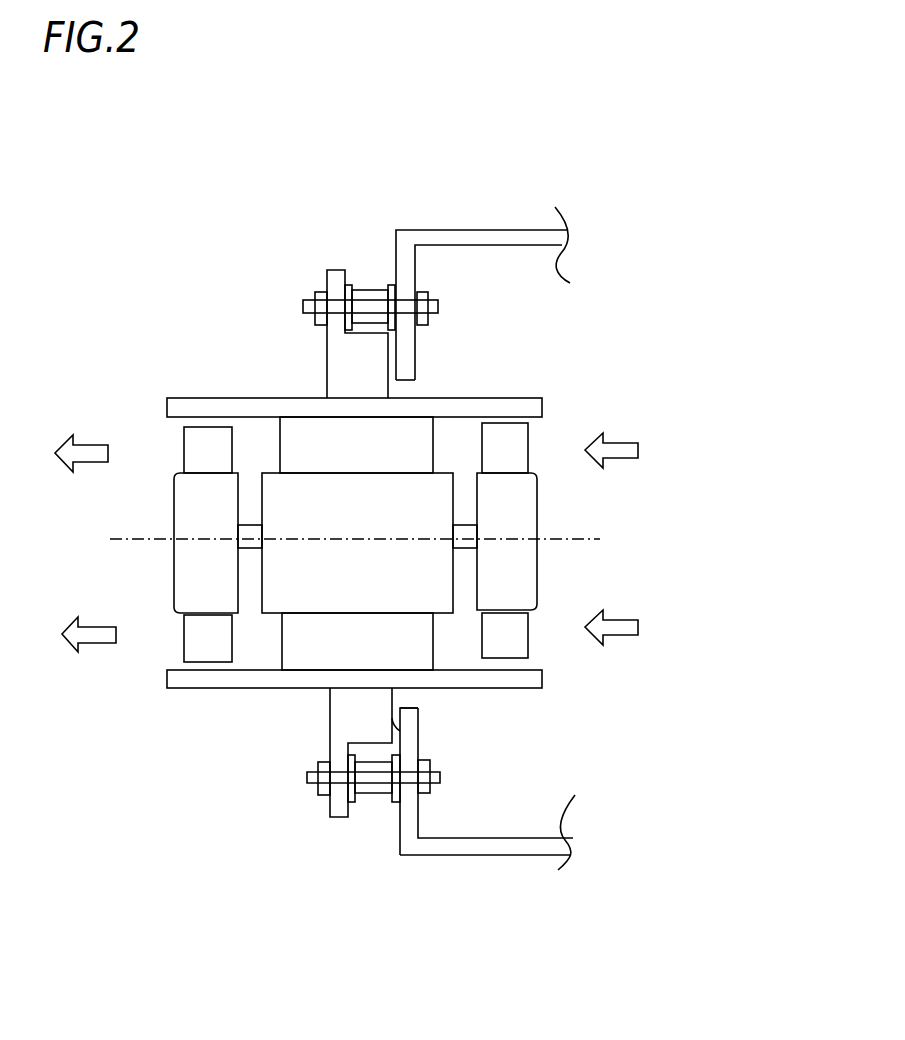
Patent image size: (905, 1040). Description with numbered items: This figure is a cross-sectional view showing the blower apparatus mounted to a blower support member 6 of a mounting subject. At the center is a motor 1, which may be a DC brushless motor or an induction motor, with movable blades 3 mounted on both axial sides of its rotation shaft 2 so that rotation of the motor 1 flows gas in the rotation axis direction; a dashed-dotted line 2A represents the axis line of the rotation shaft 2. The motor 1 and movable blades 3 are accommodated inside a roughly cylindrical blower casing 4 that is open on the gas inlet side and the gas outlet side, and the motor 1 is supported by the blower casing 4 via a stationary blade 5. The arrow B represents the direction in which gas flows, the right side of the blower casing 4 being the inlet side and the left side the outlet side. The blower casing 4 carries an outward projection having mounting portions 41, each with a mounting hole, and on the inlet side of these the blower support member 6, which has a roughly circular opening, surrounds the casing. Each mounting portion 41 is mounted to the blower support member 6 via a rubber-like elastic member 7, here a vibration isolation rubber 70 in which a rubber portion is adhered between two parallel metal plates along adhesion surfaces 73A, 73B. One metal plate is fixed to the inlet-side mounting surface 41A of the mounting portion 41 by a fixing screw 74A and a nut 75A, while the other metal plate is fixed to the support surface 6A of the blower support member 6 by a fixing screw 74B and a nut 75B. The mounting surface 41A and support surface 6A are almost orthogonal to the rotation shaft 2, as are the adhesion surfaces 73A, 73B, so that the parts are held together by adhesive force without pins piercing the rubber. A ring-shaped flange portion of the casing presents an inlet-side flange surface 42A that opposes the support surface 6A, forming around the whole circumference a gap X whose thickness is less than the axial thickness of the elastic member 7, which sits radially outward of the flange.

The motor 1 is at (262, 503).
The rotation shaft 2 is at (253, 548).
The axis line 2A is at (558, 537).
The movable blades 3 is at (183, 445).
The blower casing 4 is at (241, 397).
The stationary blade 5 is at (433, 438).
The blower support member 6 is at (482, 540).
The support surface 6A is at (397, 830).
The rubber-like elastic member 7 is at (370, 206).
The vibration isolation rubber 70 is at (368, 290).
The mounting portions 41 is at (335, 277).
The mounting surface 41A is at (351, 815).
The flange surface 42A is at (420, 732).
The adhesion surface 73A is at (362, 790).
The adhesion surface 73B is at (387, 777).
The fixing screw 74A is at (307, 782).
The fixing screw 74B is at (440, 778).
The nut 75A is at (318, 788).
The nut 75B is at (428, 765).
The gas flow direction arrow B is at (613, 618).
The gap X is at (394, 712).